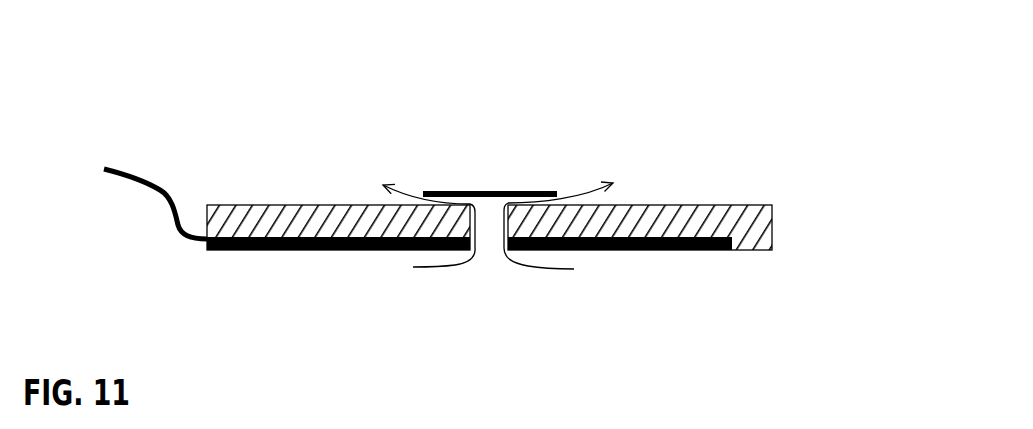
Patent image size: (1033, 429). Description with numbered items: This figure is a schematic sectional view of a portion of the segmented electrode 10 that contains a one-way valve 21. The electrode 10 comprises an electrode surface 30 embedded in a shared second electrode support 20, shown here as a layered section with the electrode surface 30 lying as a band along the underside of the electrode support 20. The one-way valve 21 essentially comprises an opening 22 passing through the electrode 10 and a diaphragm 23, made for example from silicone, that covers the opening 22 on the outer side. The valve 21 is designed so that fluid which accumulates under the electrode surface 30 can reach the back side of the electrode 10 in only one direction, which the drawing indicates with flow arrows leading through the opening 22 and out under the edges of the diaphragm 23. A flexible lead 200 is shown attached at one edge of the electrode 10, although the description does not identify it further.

The segmented electrode 10 is at (536, 197).
The second electrode support 20 is at (773, 223).
The one-way valve 21 is at (538, 148).
The opening 22 is at (491, 237).
The diaphragm 23 is at (482, 190).
The electrode surface 30 is at (705, 252).
The cable 200 is at (128, 172).